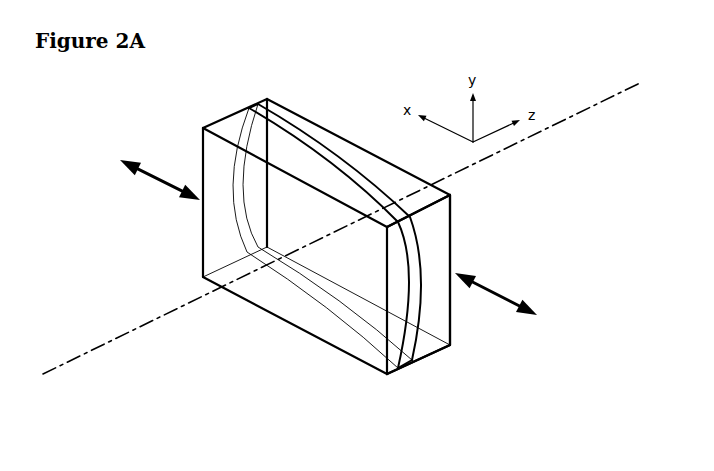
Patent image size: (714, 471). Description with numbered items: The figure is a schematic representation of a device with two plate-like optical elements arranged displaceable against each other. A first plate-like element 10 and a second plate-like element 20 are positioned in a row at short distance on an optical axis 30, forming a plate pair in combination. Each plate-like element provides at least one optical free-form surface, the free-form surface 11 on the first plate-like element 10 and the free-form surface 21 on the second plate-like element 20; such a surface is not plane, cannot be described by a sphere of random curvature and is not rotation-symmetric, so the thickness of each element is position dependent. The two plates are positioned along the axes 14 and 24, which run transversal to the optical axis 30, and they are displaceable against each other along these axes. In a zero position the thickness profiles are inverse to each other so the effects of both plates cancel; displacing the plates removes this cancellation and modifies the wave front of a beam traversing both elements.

The first plate-like element 10 is at (297, 329).
The optical free-form surface 11 is at (406, 266).
The axis of displacement 14 is at (162, 188).
The second plate-like element 20 is at (452, 328).
The optical free-form surface 21 is at (418, 340).
The axis of displacement 24 is at (492, 298).
The optical axis 30 is at (115, 342).